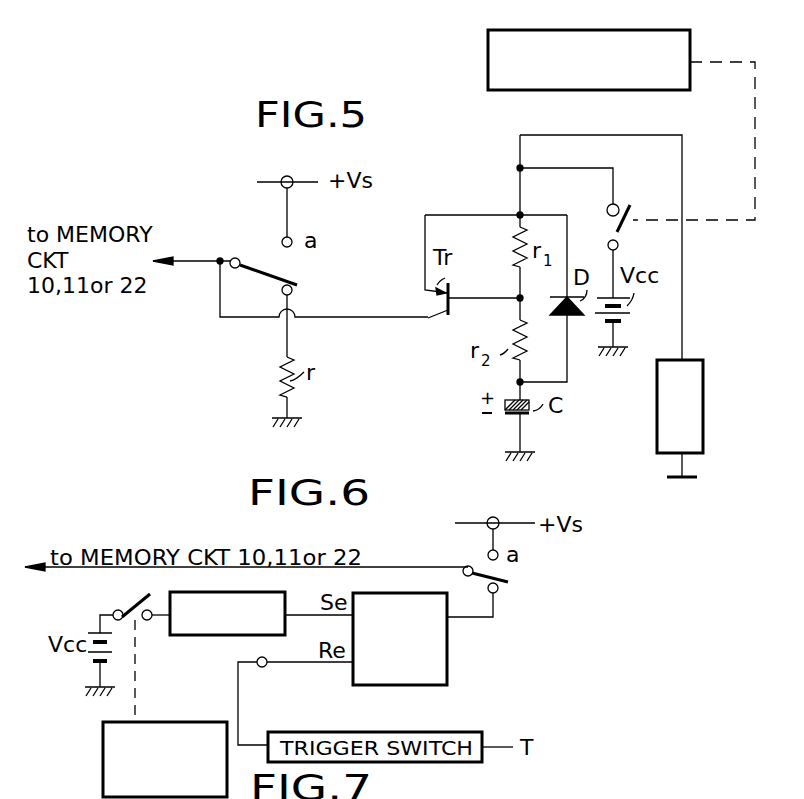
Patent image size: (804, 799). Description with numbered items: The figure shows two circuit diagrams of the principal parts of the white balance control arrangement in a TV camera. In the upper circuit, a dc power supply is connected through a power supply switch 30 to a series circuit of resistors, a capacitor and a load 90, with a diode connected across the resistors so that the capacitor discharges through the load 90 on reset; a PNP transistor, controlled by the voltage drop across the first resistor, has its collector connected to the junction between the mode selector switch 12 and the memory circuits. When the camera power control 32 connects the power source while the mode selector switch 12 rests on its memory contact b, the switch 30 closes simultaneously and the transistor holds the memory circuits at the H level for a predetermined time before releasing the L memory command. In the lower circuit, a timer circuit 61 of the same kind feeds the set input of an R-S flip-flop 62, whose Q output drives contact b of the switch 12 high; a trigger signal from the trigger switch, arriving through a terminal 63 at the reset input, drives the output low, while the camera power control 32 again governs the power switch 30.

In FIG. 5, the mode selector switch 12 is at (260, 263).
In FIG. 6, the mode selector switch 12 is at (468, 565).
In FIG. 5, the power supply switch 30 is at (623, 228).
In FIG. 6, the power supply switch 30 is at (133, 603).
In FIG. 5, the camera power control 32 is at (598, 35).
In FIG. 6, the camera power control 32 is at (404, 760).
In FIG. 5, the load 90 is at (693, 358).
In FIG. 6, the timer circuit 61 is at (193, 638).
In FIG. 6, the R-S flip-flop 62 is at (447, 653).
In FIG. 6, the terminal 63 is at (262, 668).